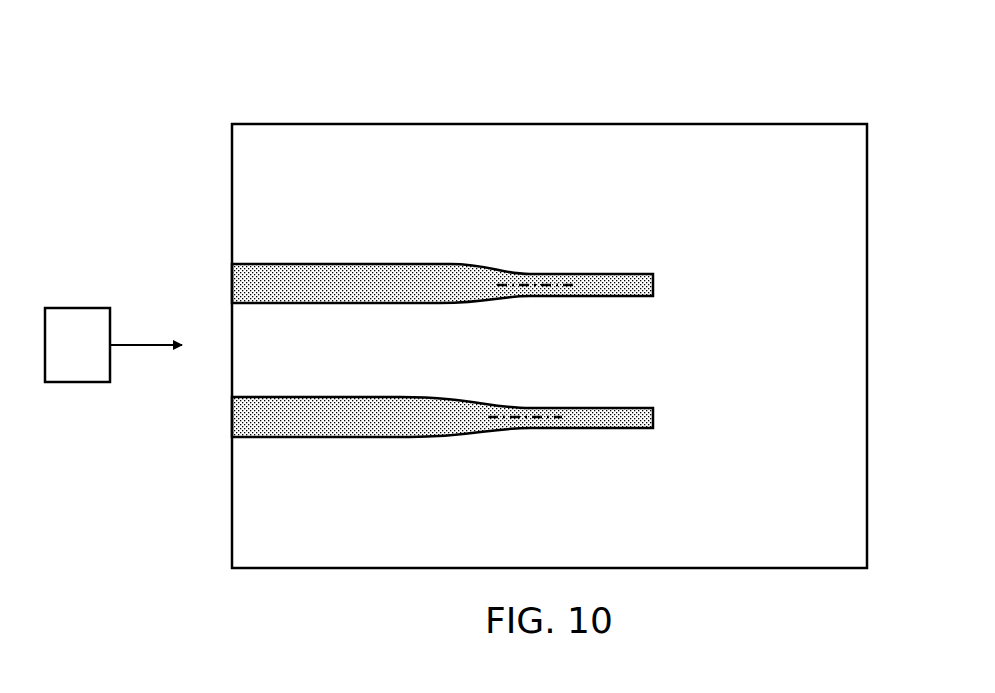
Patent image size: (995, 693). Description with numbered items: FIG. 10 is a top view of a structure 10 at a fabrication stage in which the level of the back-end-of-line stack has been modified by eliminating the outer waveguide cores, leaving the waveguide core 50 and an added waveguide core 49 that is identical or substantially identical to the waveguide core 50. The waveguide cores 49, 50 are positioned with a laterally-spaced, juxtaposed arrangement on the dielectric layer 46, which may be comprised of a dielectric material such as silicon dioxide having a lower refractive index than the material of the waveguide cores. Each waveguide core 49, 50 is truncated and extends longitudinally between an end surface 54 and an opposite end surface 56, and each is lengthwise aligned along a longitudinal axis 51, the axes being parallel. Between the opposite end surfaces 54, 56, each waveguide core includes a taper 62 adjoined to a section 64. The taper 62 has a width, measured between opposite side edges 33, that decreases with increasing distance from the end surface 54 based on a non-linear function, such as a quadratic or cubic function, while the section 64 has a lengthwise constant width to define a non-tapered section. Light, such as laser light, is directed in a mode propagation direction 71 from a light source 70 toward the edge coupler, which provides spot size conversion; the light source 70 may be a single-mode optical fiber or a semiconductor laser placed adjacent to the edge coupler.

The optical system 10 is at (224, 100).
The side edges 33 is at (385, 262).
The dielectric layer 46 is at (272, 547).
The waveguide core 49 is at (638, 257).
The waveguide core 50 is at (638, 391).
The longitudinal axis 51 is at (518, 283).
The end surface 54 is at (230, 288).
The end surface 56 is at (653, 287).
The taper 62 is at (452, 278).
The section 64 is at (609, 285).
The light source 70 is at (77, 345).
The mode propagation direction 71 is at (148, 343).